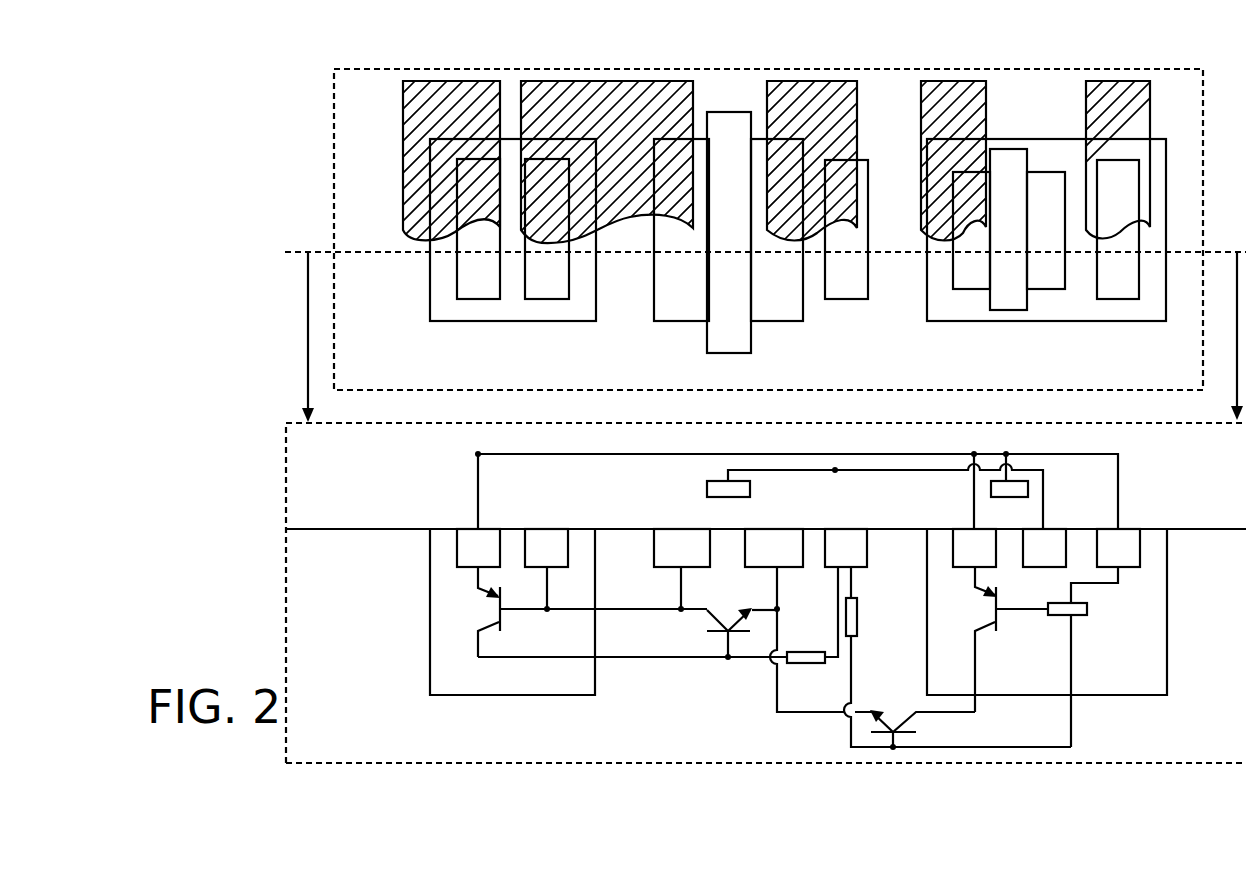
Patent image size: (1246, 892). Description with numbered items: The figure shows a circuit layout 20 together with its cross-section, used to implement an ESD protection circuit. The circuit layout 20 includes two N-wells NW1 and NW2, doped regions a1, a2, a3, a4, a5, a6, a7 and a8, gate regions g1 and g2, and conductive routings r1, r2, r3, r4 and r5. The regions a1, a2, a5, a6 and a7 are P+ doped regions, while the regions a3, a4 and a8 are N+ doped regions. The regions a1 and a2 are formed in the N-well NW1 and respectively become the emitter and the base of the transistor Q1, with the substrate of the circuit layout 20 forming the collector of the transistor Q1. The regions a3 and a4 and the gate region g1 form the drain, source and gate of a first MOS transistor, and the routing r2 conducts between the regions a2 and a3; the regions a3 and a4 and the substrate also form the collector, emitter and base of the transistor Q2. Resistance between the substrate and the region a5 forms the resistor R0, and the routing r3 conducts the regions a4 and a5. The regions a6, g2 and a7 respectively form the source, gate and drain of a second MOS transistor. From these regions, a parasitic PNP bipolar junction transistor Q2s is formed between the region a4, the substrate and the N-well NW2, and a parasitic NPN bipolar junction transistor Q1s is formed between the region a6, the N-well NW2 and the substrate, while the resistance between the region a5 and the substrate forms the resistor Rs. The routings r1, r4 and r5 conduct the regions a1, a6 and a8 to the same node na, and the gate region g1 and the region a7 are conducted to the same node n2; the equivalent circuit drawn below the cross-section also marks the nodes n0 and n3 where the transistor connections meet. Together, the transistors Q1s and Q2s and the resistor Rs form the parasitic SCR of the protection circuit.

The circuit layout 20 is at (326, 193).
The conductive routing r1 is at (403, 84).
The conductive routing r2 is at (693, 92).
The conductive routing r3 is at (857, 92).
The conductive routing r4 is at (921, 119).
The conductive routing r5 is at (1086, 86).
The gate region g1 is at (718, 355).
The gate region g2 is at (1007, 149).
The P+ doped region a1 is at (463, 300).
The P+ doped region a2 is at (550, 300).
The N+ doped region a3 is at (698, 322).
The N+ doped region a4 is at (760, 322).
The P+ doped region a5 is at (837, 300).
The P+ doped region a6 is at (962, 290).
The P+ doped region a7 is at (1043, 290).
The N+ doped region a8 is at (1122, 302).
The N-well NW1 is at (544, 319).
The N-well NW2 is at (1038, 318).
The node na is at (783, 486).
The node n0 is at (603, 622).
The node n2 is at (897, 544).
The node n3 is at (632, 670).
The transistor Q1 is at (476, 612).
The transistor Q2 is at (729, 621).
The parasitic NPN bipolar junction transistor Q1s is at (1015, 639).
The parasitic PNP bipolar junction transistor Q2s is at (922, 718).
The resistor Rs is at (957, 658).
The resistor R0 is at (806, 671).